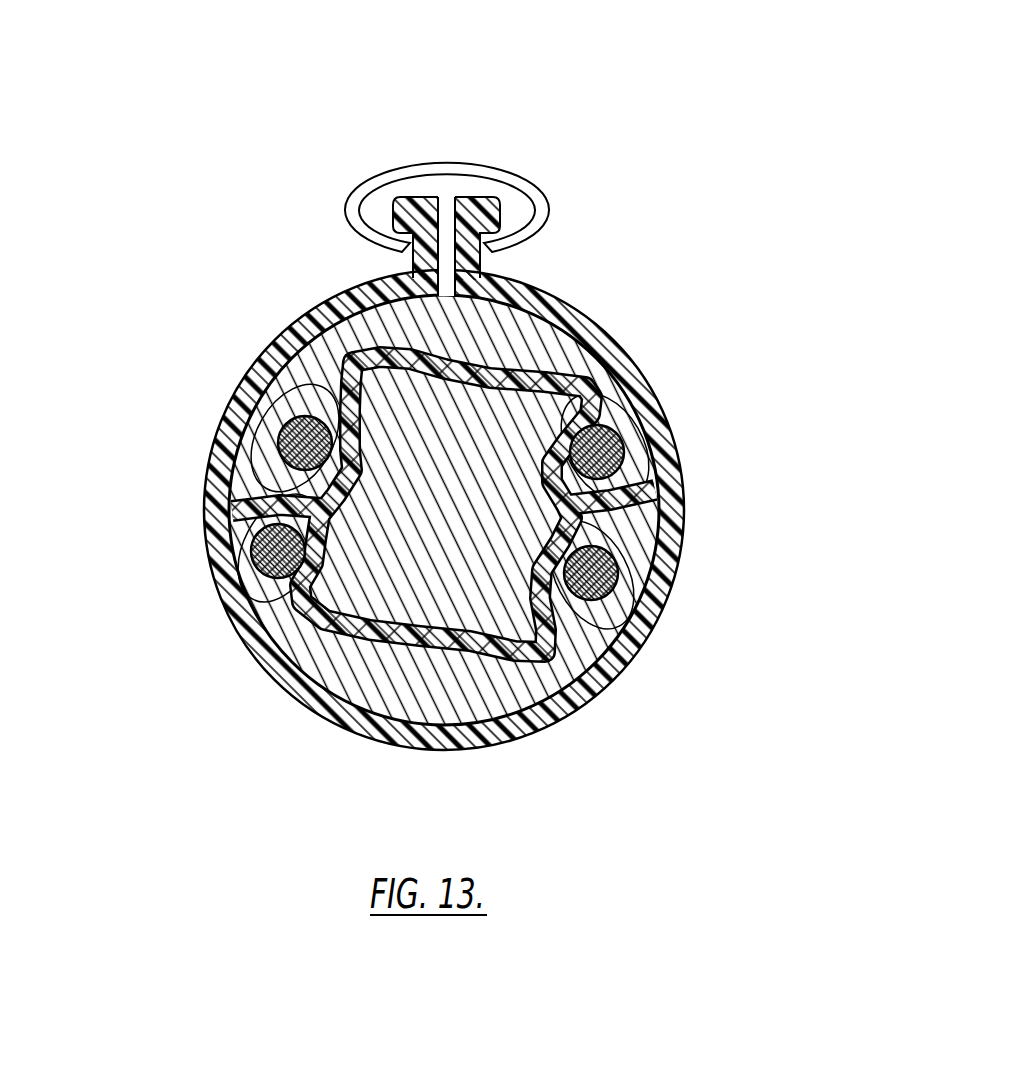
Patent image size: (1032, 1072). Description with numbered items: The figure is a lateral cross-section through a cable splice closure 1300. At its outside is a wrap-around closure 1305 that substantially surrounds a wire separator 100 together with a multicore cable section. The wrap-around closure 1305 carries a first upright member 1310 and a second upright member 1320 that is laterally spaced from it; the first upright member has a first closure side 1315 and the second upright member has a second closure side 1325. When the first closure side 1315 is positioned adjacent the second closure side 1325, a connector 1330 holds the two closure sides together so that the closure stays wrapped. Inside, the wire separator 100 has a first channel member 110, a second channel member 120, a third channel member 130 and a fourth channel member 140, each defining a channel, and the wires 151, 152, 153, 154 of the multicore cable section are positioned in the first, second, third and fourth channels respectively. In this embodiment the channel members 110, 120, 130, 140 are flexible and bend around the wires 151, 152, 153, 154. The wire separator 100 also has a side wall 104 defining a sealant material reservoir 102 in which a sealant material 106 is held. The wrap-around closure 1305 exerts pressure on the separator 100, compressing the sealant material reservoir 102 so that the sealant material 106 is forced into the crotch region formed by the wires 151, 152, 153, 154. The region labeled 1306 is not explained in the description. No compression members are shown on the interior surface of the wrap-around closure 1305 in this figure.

The wire separator 100 is at (488, 690).
The sealant material reservoir 102 is at (512, 335).
The side wall 104 is at (393, 330).
The sealant material 106 is at (416, 605).
The first channel member 110 is at (233, 418).
The second channel member 120 is at (653, 417).
The third channel member 130 is at (232, 548).
The fourth channel member 140 is at (657, 615).
The wire 151 is at (275, 360).
The wire 152 is at (607, 405).
The wire 153 is at (274, 600).
The wire 154 is at (580, 605).
The cable splice closure 1300 is at (832, 416).
The wrap-around closure 1305 is at (653, 397).
The left web 1306 is at (357, 678).
The first upright member 1310 is at (412, 203).
The first closure side 1315 is at (446, 210).
The second upright member 1320 is at (488, 203).
The second closure side 1325 is at (452, 207).
The connector 1330 is at (496, 248).